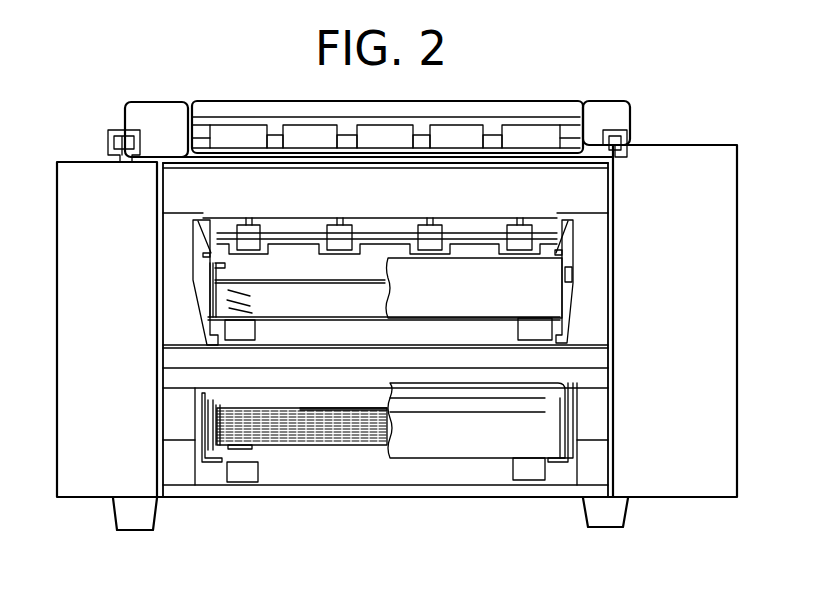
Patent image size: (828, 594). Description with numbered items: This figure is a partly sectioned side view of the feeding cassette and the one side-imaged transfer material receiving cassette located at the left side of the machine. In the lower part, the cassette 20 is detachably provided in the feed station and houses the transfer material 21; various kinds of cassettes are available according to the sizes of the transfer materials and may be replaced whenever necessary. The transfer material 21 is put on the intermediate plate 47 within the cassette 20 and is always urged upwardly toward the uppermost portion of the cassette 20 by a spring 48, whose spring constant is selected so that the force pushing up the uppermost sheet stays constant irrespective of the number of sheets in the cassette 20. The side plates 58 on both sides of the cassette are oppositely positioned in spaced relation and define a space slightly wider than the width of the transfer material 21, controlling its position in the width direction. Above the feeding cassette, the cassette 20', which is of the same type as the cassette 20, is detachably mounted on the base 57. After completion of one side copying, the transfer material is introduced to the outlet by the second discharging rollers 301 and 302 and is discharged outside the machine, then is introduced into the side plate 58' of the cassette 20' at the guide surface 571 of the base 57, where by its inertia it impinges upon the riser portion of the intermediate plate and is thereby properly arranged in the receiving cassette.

The cassette 20 is at (480, 455).
The cassette 20' is at (524, 291).
The transfer material 21 is at (328, 425).
The intermediate plate 47 is at (360, 440).
The spring 48 is at (252, 448).
The base 57 is at (193, 243).
The guide surface 571 is at (213, 237).
The side plate 58 is at (236, 403).
The side plate 58' is at (257, 282).
The second discharging roller 301 is at (437, 238).
The second discharging roller 302 is at (430, 223).